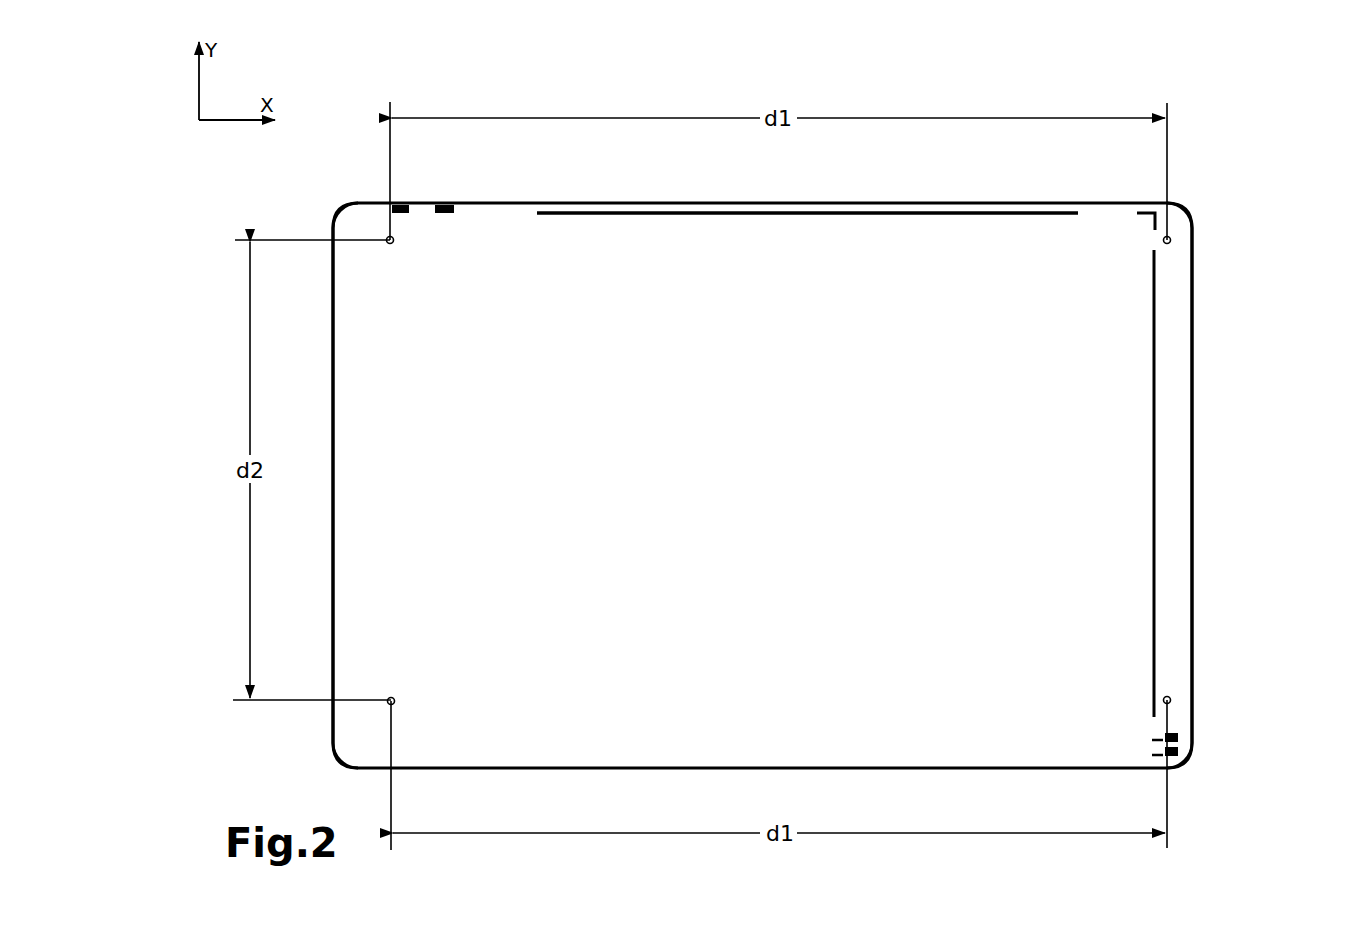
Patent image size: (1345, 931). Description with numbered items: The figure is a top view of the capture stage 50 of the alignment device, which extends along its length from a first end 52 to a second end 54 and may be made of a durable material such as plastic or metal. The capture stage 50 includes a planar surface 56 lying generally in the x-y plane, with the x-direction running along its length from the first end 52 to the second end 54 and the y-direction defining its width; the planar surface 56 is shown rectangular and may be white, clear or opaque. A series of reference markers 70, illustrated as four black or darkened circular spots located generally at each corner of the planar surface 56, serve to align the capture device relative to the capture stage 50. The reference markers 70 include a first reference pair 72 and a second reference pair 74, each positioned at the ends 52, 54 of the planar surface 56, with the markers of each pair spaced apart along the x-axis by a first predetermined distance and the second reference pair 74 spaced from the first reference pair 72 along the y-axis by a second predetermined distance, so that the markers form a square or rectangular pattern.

The capture stage 50 is at (652, 99).
The first end 52 is at (355, 194).
The second end 54 is at (1204, 209).
The planar surface 56 is at (815, 260).
The reference markers 70 is at (412, 242).
The first reference pair 72 is at (387, 238).
The second reference pair 74 is at (389, 704).